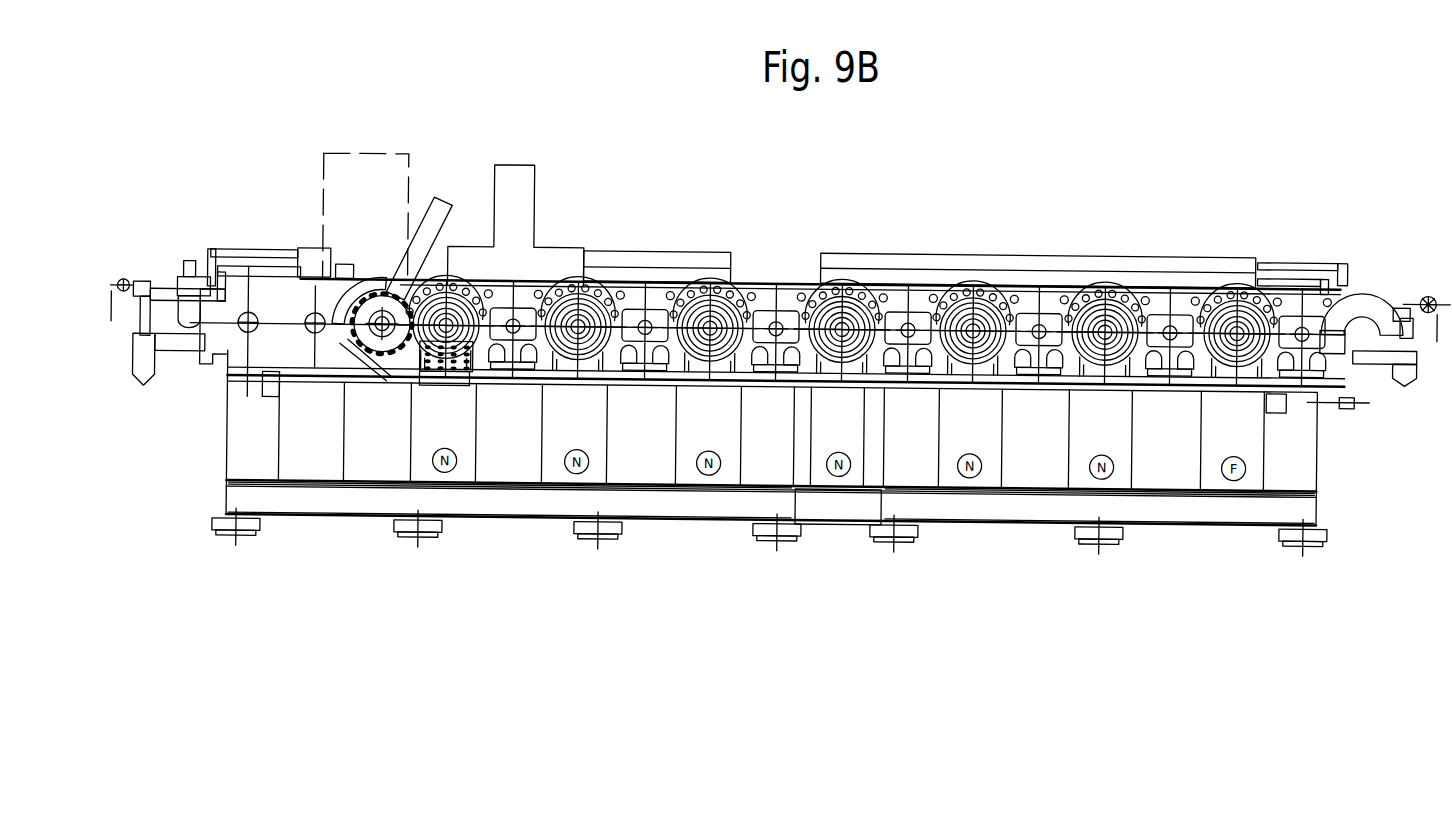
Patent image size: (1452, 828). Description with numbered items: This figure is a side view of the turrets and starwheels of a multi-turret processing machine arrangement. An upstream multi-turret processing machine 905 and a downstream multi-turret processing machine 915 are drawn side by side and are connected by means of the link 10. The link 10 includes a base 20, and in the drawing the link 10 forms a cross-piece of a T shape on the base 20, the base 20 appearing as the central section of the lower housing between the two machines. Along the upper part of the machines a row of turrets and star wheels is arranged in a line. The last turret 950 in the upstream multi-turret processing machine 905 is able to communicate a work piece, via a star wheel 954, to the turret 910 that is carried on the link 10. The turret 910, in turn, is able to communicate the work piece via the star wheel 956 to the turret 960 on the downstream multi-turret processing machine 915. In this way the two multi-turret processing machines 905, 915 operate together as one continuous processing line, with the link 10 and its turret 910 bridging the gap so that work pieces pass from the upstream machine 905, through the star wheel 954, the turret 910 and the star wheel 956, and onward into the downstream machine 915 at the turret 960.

The link 10 is at (834, 550).
The base 20 is at (835, 414).
The upstream multi-turret processing machine 905 is at (493, 547).
The turret 910 is at (825, 300).
The downstream multi-turret processing machine 915 is at (1085, 557).
The last turret 950 is at (697, 300).
The star wheel 954 is at (768, 300).
The star wheel 956 is at (896, 313).
The turret 960 is at (955, 300).